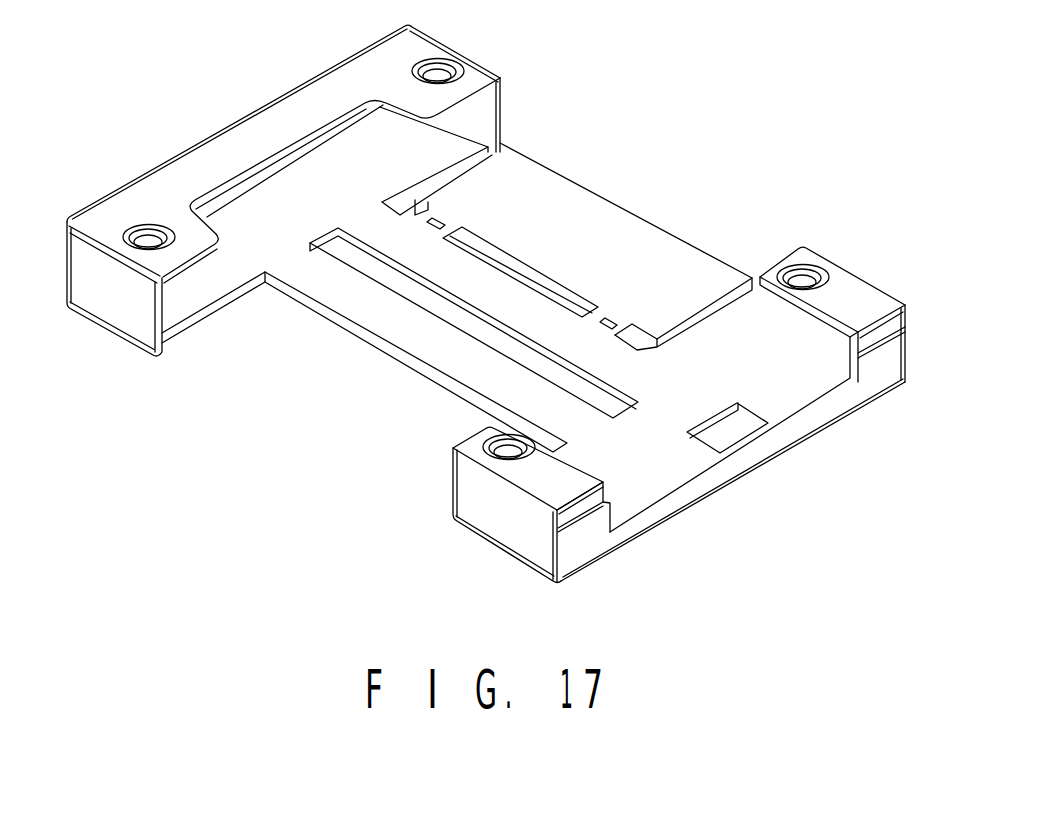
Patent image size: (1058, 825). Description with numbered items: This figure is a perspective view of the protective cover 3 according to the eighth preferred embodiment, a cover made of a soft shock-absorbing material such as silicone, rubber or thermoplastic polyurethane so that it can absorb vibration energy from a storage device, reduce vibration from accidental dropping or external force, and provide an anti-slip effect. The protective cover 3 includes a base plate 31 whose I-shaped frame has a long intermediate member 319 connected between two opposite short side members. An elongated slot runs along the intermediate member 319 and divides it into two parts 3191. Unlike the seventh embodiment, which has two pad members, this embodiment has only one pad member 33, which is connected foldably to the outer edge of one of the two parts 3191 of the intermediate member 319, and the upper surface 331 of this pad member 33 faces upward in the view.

The protective cover 3 is at (486, 303).
The base plate 31 is at (533, 332).
The intermediate member 319 is at (513, 385).
The parts of the intermediate member 3191 is at (493, 288).
The pad member 33 is at (626, 231).
The top surface of pad 331 is at (662, 242).